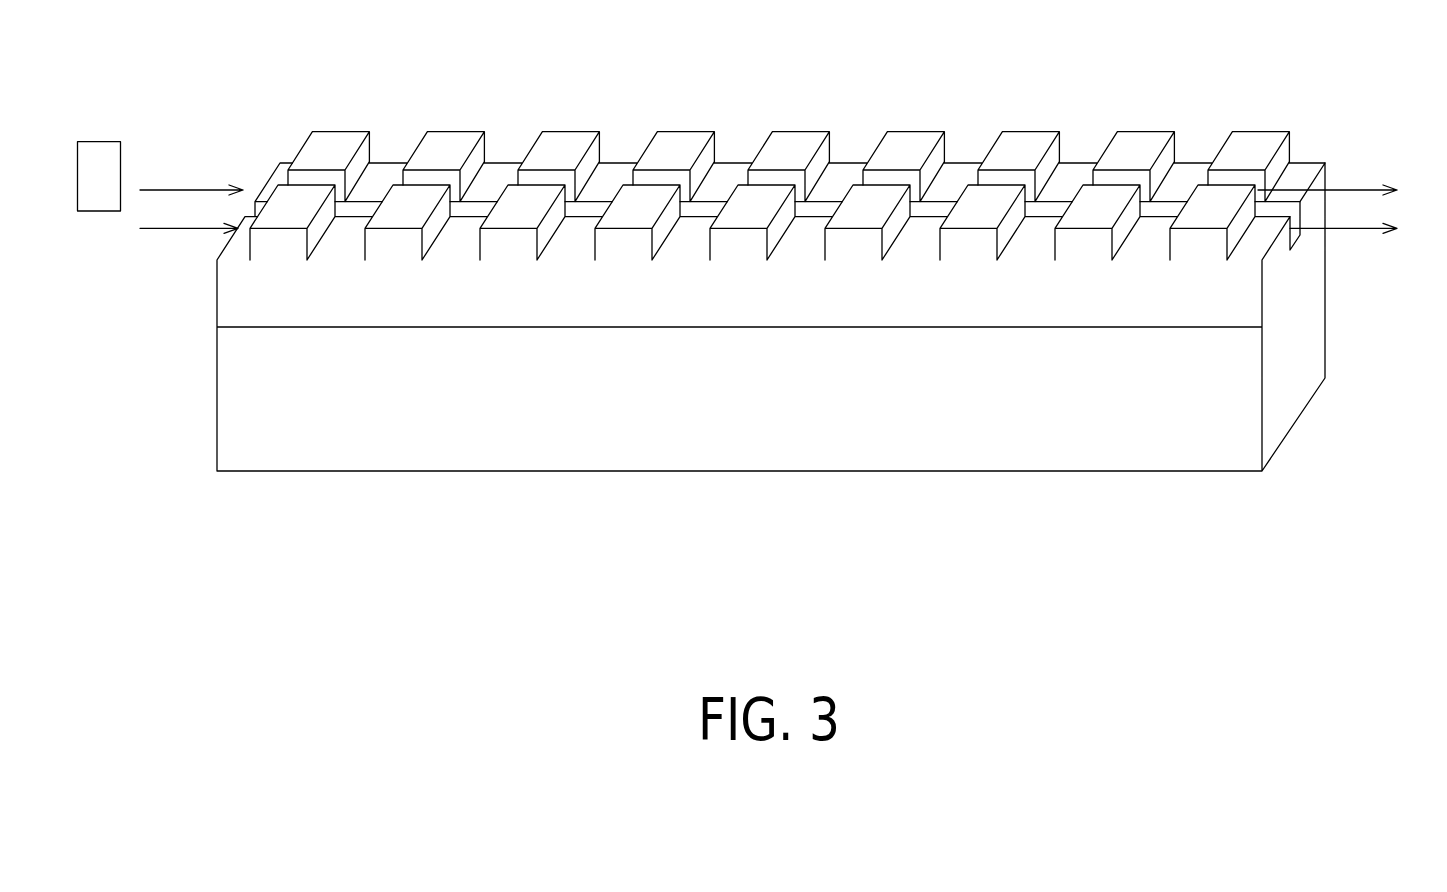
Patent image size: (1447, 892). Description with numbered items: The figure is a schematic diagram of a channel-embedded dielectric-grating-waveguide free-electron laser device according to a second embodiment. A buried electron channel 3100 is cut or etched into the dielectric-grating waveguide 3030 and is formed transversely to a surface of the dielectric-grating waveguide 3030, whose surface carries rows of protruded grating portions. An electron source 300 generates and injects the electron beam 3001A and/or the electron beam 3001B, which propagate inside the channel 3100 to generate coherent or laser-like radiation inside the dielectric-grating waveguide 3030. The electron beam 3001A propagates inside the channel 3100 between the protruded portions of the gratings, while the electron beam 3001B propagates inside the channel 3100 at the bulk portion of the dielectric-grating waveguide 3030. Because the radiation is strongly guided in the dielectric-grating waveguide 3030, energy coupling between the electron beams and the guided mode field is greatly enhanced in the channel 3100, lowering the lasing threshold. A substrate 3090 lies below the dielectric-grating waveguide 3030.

The electron source 300 is at (92, 152).
The electron beam 3001A is at (174, 188).
The electron beam 3001B is at (170, 228).
The dielectric-grating waveguide 3030 is at (353, 287).
The channel 3100 is at (786, 168).
The substrate 3090 is at (1225, 450).